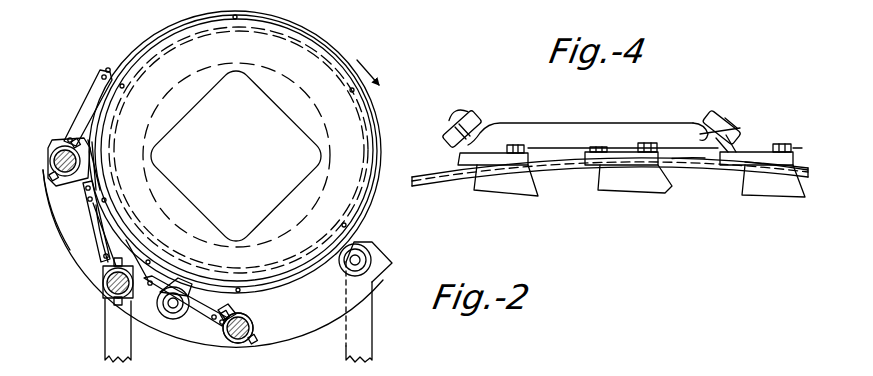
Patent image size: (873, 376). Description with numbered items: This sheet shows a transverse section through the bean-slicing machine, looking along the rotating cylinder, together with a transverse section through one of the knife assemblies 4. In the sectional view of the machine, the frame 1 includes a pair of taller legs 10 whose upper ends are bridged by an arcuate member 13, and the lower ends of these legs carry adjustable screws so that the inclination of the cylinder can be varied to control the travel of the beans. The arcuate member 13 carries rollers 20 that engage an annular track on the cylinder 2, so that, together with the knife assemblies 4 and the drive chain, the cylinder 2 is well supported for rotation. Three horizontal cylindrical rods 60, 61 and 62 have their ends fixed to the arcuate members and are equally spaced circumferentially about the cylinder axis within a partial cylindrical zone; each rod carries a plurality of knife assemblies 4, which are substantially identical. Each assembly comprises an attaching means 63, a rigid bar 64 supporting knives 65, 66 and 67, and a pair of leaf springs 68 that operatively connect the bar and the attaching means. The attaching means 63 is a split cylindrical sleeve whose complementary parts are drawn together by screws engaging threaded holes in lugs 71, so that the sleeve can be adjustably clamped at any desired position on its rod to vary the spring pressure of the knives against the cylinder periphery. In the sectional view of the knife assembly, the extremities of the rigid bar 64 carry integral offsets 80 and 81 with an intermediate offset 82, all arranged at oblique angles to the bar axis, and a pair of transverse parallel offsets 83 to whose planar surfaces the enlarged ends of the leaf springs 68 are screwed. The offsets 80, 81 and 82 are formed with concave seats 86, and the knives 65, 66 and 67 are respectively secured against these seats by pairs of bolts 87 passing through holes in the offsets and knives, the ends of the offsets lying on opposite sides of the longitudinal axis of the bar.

In FIG. 2, the frame 1 is at (104, 328).
In FIG. 2, the rotatable ring 2 is at (160, 40).
In FIG. 2, the knife assembly 4 is at (86, 106).
In FIG. 4, the knife assembly 4 is at (706, 118).
In FIG. 2, the taller legs 10 is at (108, 352).
In FIG. 2, the arcuate member 13 is at (380, 274).
In FIG. 2, the rollers 20 is at (366, 254).
In FIG. 2, the horizontal cylindrical rod 60 is at (57, 184).
In FIG. 2, the horizontal cylindrical rod 61 is at (112, 281).
In FIG. 2, the horizontal cylindrical rod 62 is at (254, 328).
In FIG. 2, the attaching means 63 is at (62, 146).
In FIG. 4, the rigid bar 64 is at (570, 124).
In FIG. 4, the knife 65 is at (440, 182).
In FIG. 4, the knife 66 is at (654, 178).
In FIG. 4, the knife 67 is at (792, 180).
In FIG. 2, the leaf springs 68 is at (100, 238).
In FIG. 2, the lugs 71 is at (242, 310).
In FIG. 4, the offset 80 is at (460, 158).
In FIG. 4, the offset 81 is at (728, 172).
In FIG. 4, the offset 82 is at (592, 168).
In FIG. 4, the transverse offsets 83 is at (450, 134).
In FIG. 4, the concave seats 86 is at (478, 174).
In FIG. 4, the bolts 87 is at (516, 144).